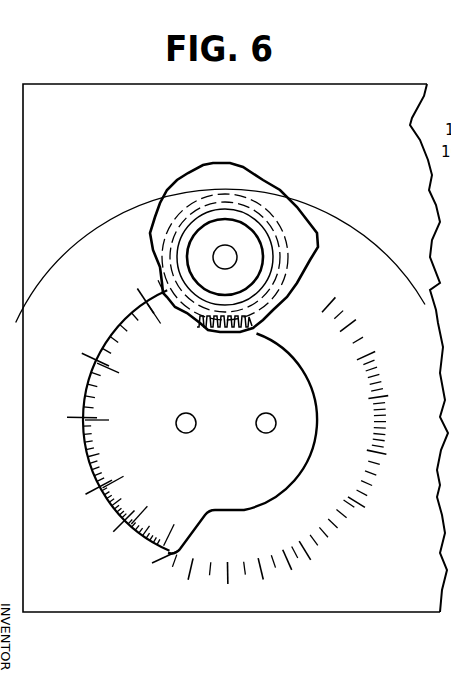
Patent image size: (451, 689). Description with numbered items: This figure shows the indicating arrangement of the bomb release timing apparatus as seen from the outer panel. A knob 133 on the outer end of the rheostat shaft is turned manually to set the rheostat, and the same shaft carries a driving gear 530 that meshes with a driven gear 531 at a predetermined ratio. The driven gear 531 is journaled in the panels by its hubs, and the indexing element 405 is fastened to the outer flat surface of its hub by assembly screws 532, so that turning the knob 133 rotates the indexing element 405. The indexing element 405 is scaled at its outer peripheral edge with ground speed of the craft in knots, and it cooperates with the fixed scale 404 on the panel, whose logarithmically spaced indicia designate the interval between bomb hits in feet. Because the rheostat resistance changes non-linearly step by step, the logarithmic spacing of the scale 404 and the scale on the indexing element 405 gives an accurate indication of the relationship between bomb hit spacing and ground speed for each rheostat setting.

The knob 133 is at (254, 228).
The scale 404 is at (351, 522).
The indexing element 405 is at (298, 475).
The driving gear 530 is at (267, 312).
The driven gear 531 is at (262, 333).
The assembly screws 532 is at (266, 413).